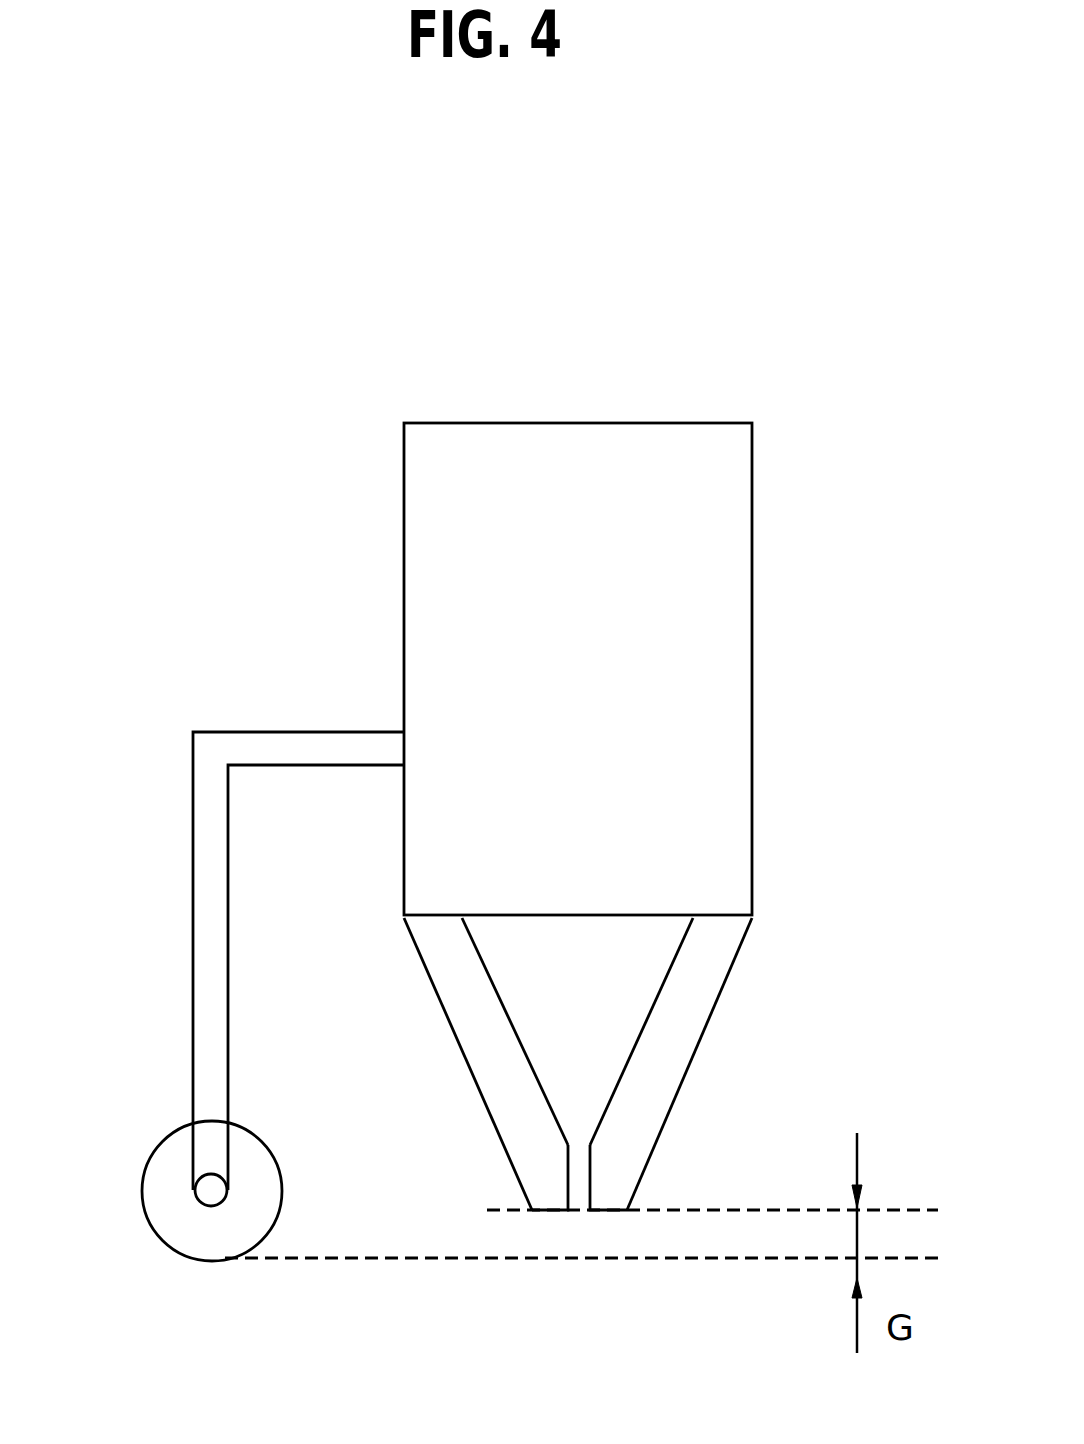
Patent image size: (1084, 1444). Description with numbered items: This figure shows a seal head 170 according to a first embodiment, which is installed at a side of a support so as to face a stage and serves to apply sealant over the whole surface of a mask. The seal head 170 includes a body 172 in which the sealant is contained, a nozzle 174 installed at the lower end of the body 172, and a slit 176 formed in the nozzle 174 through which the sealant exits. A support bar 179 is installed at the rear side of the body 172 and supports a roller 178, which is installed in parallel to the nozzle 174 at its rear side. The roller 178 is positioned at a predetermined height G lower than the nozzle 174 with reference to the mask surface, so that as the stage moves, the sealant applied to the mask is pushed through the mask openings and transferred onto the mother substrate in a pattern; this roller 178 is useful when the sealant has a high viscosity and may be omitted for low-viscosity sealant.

The seal head 170 is at (256, 266).
The body 172 is at (732, 643).
The nozzle 174 is at (658, 1088).
The slit 176 is at (582, 1192).
The roller 178 is at (183, 1217).
The support bar 179 is at (205, 812).